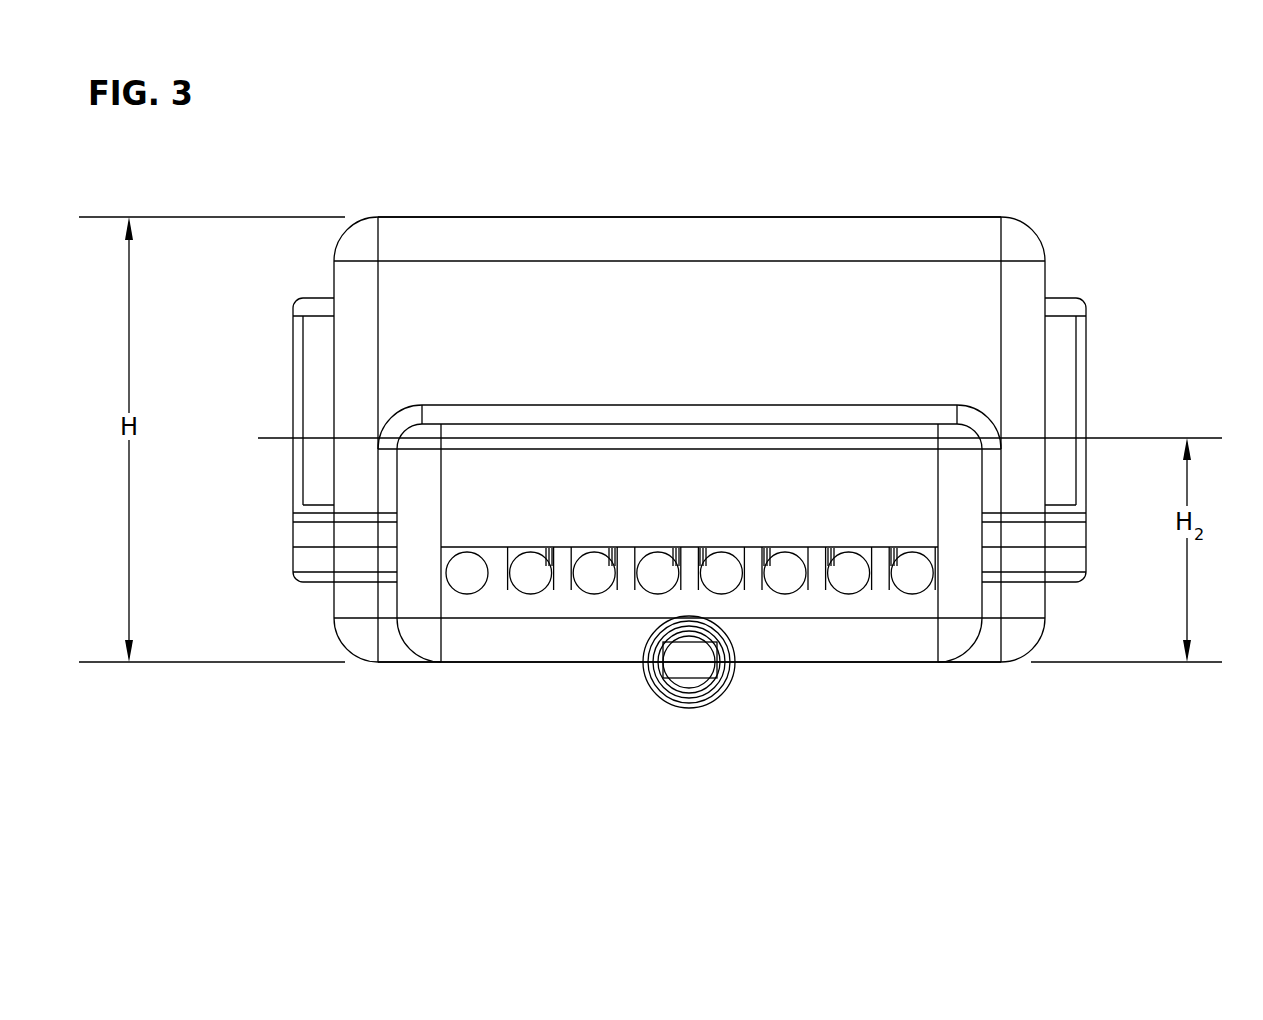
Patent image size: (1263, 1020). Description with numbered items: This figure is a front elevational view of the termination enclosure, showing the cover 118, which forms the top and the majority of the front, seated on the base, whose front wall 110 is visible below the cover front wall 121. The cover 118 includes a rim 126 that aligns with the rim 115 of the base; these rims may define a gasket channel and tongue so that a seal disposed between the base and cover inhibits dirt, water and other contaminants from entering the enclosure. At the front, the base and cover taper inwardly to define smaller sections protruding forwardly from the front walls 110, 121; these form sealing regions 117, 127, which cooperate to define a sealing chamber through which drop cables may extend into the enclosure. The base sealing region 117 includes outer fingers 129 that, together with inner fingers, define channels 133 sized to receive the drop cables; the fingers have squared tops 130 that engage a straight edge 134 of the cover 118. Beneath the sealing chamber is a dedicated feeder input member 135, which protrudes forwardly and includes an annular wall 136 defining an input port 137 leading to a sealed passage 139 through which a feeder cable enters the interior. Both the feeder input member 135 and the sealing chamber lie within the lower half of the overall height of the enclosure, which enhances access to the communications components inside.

The front wall 110 is at (982, 648).
The rim 115 is at (1073, 560).
The sealing region 117 is at (528, 632).
The cover 118 is at (806, 217).
The front wall 121 is at (723, 347).
The rim 126 is at (1075, 535).
The sealing region 127 is at (673, 505).
The outer fingers 129 is at (815, 560).
The squared tops 130 is at (818, 547).
The channels 133 is at (465, 578).
The straight edge 134 is at (498, 546).
The input member 135 is at (640, 698).
The annular wall 136 is at (727, 692).
The input port 137 is at (688, 682).
The sealed passage 139 is at (672, 674).